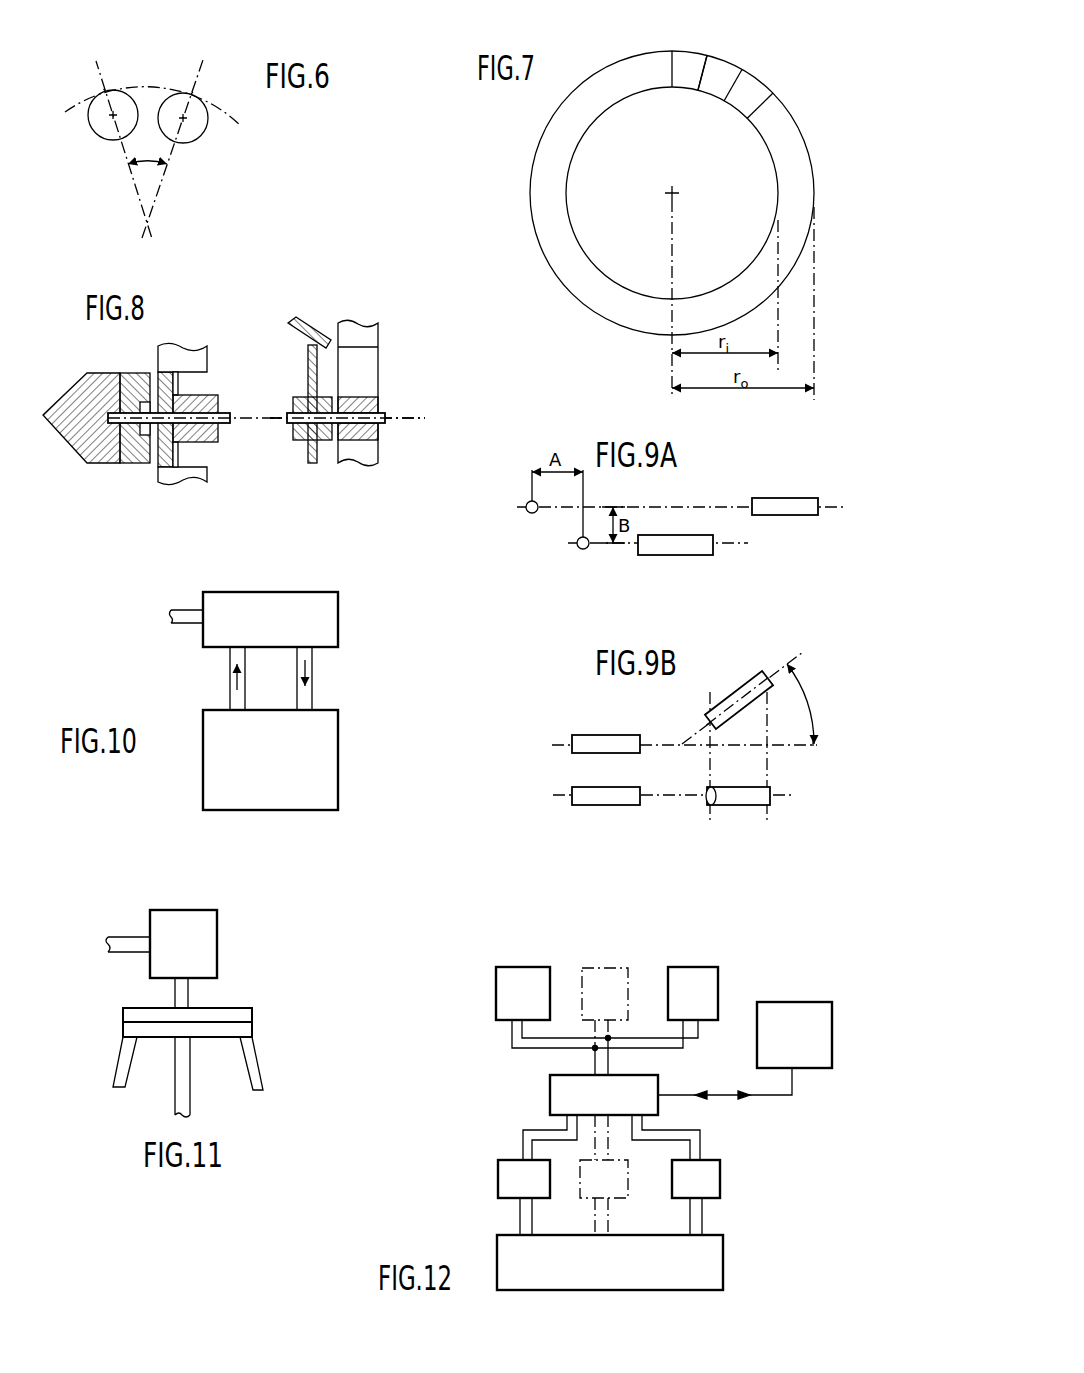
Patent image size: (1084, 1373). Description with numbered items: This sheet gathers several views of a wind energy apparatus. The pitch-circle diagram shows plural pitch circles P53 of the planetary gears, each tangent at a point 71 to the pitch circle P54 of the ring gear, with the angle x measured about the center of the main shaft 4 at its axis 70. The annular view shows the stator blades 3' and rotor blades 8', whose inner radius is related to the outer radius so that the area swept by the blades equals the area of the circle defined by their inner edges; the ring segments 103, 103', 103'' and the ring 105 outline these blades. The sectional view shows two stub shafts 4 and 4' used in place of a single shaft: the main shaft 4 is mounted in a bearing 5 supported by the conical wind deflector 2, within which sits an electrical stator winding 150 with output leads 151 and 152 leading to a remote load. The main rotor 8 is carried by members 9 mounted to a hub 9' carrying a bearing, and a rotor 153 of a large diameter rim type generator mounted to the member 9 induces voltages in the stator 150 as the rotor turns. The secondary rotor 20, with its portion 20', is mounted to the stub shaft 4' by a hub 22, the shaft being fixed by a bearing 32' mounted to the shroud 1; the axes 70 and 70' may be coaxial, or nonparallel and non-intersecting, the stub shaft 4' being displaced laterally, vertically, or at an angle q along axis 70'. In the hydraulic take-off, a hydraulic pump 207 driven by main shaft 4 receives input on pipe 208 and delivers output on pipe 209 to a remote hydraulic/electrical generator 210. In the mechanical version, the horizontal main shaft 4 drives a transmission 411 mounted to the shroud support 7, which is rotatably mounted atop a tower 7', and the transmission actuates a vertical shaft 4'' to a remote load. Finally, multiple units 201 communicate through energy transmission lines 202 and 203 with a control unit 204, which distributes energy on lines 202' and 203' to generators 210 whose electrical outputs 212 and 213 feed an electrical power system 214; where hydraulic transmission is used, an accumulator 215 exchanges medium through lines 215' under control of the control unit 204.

In FIG. 8, the shroud 1 is at (300, 327).
In FIG. 8, the conical wind deflector 2 is at (68, 402).
In FIG. 7, the stator blades 3' is at (721, 108).
In FIG. 8, the main shaft 4 is at (177, 403).
In FIG. 9A, the main shaft 4 is at (640, 558).
In FIG. 9B, the main shaft 4 is at (606, 814).
In FIG. 10, the main shaft 4 is at (186, 602).
In FIG. 11, the main shaft 4 is at (128, 929).
In FIG. 8, the stub shaft 4' is at (347, 435).
In FIG. 9A, the stub shaft 4' is at (657, 492).
In FIG. 9B, the stub shaft 4' is at (672, 748).
In FIG. 11, the vertical shaft 4'' is at (198, 1077).
In FIG. 8, the bearing 5 is at (122, 380).
In FIG. 11, the shroud support 7 is at (199, 1005).
In FIG. 11, the tower 7' is at (203, 1056).
In FIG. 8, the main rotor 8 is at (197, 410).
In FIG. 7, the rotor blades 8' is at (699, 92).
In FIG. 8, the members 9 is at (204, 398).
In FIG. 8, the hub 9' is at (211, 413).
In FIG. 8, the secondary rotor 20 is at (374, 386).
In FIG. 8, the housing portion 20' is at (376, 360).
In FIG. 8, the hub 22 is at (368, 408).
In FIG. 8, the bearing 32' is at (305, 397).
In FIG. 6, the axis 70 is at (150, 147).
In FIG. 8, the axis 70 is at (249, 425).
In FIG. 9A, the axis 70 is at (681, 528).
In FIG. 9B, the axis 70 is at (691, 757).
In FIG. 9B, the axis 70' is at (749, 686).
In FIG. 6, the tangent point 71 is at (127, 72).
In FIG. 6, the pitch circle P53 is at (89, 120).
In FIG. 6, the pitch circle P54 is at (237, 122).
In FIG. 7, the ring segment 103 is at (690, 54).
In FIG. 7, the ring segment 103' is at (726, 61).
In FIG. 7, the ring segment 103'' is at (763, 75).
In FIG. 7, the ring 105 is at (795, 100).
In FIG. 8, the electrical stator winding 150 is at (140, 372).
In FIG. 8, the output lead 151 is at (140, 467).
In FIG. 8, the output lead 152 is at (147, 467).
In FIG. 8, the rotor 153 is at (163, 371).
In FIG. 12, the units 201 is at (514, 967).
In FIG. 12, the energy transmission line 202 is at (610, 1047).
In FIG. 12, the line 202' is at (612, 1132).
In FIG. 12, the energy transmission line 203 is at (627, 1035).
In FIG. 12, the line 203' is at (613, 1137).
In FIG. 12, the control unit 204 is at (567, 1075).
In FIG. 10, the hydraulic pump 207 is at (280, 592).
In FIG. 10, the pipe 208 is at (227, 680).
In FIG. 10, the pipe 209 is at (313, 693).
In FIG. 10, the generator 210 is at (338, 733).
In FIG. 12, the generator 210 is at (498, 1183).
In FIG. 12, the electrical output 212 is at (518, 1207).
In FIG. 12, the electrical output 213 is at (533, 1205).
In FIG. 12, the electrical power system 214 is at (725, 1258).
In FIG. 12, the accumulator 215 is at (794, 1020).
In FIG. 12, the lines 215' is at (745, 1084).
In FIG. 11, the transmission 411 is at (217, 940).